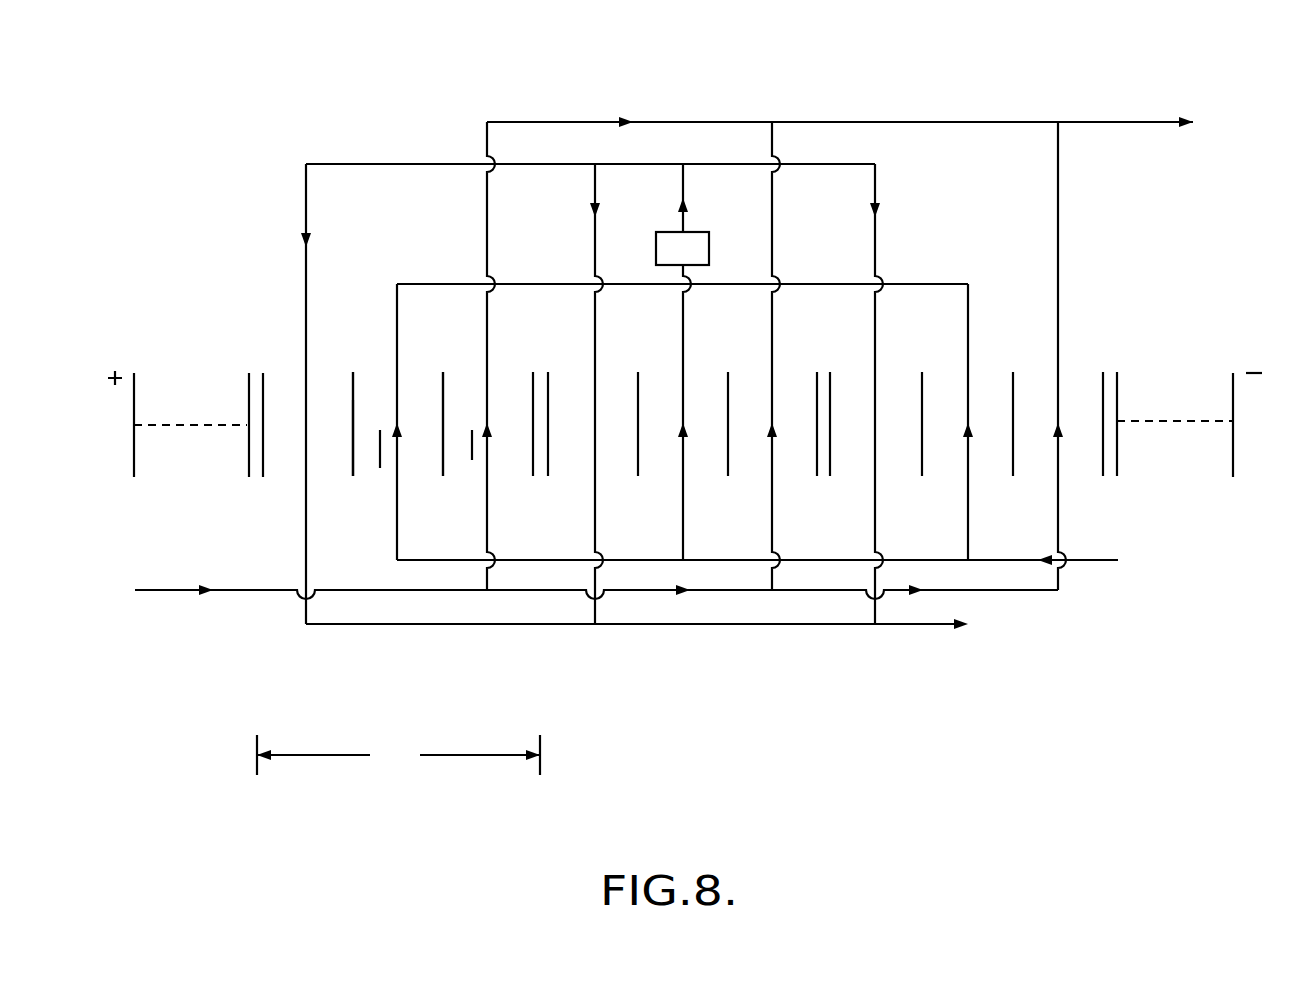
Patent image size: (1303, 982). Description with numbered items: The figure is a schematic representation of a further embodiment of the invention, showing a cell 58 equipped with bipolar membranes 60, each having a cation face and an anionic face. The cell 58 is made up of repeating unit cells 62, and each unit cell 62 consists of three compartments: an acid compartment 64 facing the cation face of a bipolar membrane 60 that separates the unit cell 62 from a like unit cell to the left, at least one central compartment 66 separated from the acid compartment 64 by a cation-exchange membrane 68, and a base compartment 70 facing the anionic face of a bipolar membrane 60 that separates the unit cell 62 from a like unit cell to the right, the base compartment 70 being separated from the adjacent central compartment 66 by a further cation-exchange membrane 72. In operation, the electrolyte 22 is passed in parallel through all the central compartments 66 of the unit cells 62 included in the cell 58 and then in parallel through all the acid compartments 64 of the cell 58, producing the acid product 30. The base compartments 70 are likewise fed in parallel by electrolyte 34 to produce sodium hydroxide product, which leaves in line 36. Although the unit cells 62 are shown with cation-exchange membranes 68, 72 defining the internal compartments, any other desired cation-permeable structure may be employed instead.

The cell 58 is at (232, 143).
The bipolar membrane 60 is at (684, 447).
The unit cell 62 is at (398, 755).
The acid compartment 64 is at (324, 387).
The central compartment 66 is at (380, 468).
The cation-exchange membrane 68 is at (353, 427).
The base compartment 70 is at (472, 460).
The cation-exchange membrane 72 is at (444, 405).
The electrolyte 22 is at (1082, 558).
The acid product 30 is at (913, 625).
The electrolyte 34 is at (185, 597).
The line 36 is at (1102, 122).